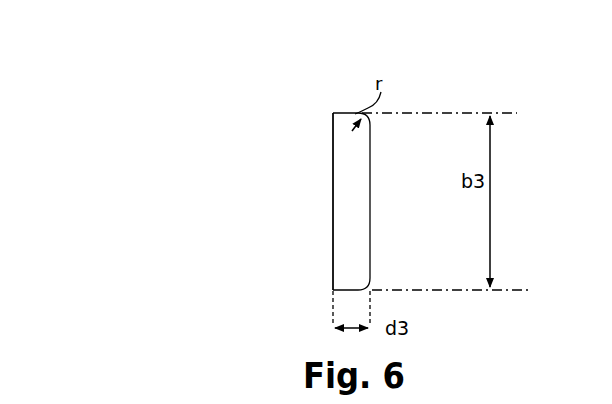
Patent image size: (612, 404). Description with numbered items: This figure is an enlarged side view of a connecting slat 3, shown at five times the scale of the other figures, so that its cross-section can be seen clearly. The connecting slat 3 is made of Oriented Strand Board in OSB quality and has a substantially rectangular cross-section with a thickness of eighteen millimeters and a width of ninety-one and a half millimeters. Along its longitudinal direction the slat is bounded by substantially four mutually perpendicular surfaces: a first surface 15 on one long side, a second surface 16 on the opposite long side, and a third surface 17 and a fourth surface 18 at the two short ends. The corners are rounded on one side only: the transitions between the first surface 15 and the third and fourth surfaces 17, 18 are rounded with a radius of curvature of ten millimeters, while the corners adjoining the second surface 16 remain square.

The connecting slat 3 is at (190, 177).
The first surface 15 is at (370, 213).
The second surface 16 is at (333, 213).
The third surface 17 is at (340, 291).
The fourth surface 18 is at (336, 113).